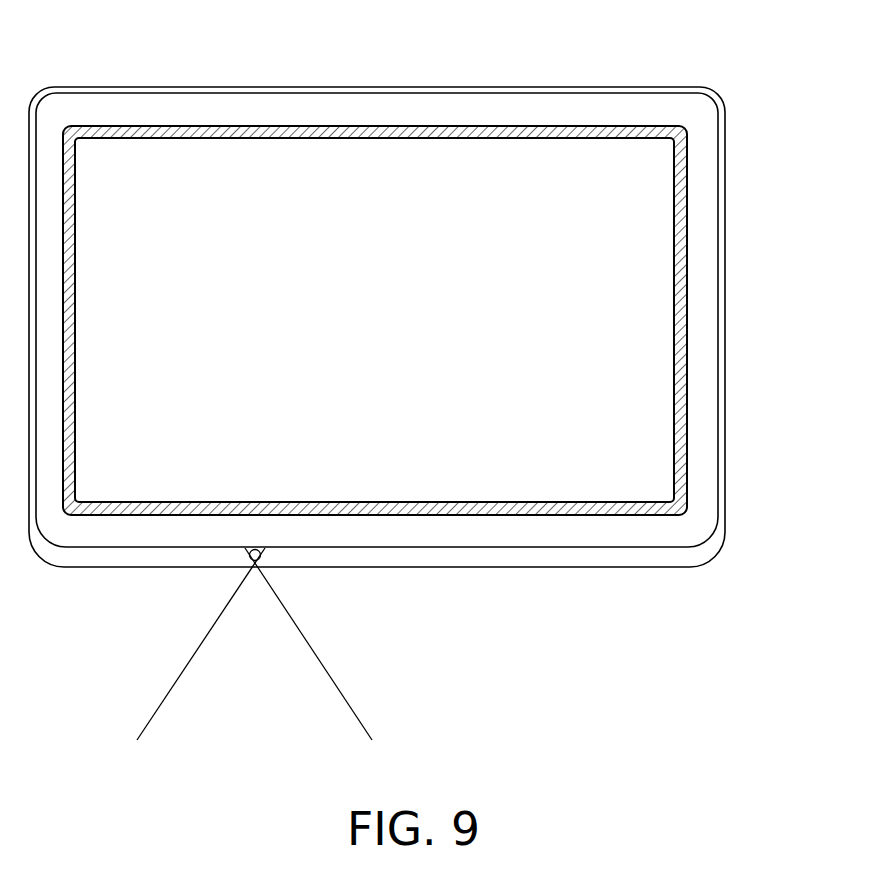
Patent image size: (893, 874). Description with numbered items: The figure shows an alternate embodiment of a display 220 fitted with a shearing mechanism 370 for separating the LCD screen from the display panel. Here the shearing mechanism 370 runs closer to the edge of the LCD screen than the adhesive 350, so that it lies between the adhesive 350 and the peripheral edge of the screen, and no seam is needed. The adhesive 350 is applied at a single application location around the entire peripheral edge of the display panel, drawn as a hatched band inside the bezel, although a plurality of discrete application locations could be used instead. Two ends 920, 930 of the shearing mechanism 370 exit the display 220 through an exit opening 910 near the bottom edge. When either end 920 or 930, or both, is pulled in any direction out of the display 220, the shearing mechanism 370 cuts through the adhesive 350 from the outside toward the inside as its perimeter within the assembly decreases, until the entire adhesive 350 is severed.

The display 220 is at (668, 57).
The shearing mechanism 370 is at (720, 263).
The adhesive 350 is at (687, 367).
The exit opening 910 is at (263, 558).
The end of shearing mechanism 920 is at (193, 652).
The end of shearing mechanism 930 is at (325, 673).